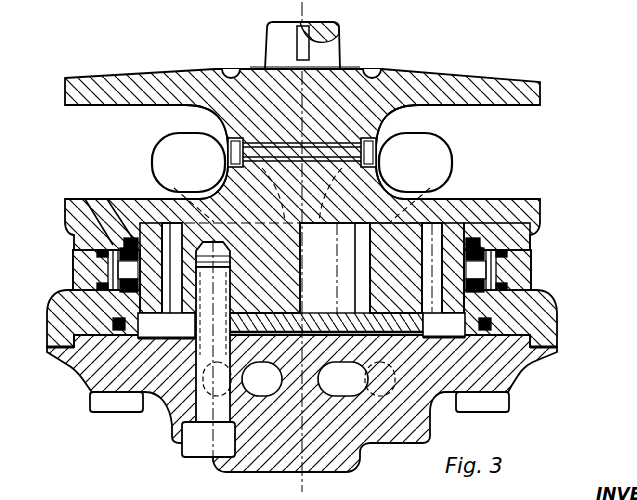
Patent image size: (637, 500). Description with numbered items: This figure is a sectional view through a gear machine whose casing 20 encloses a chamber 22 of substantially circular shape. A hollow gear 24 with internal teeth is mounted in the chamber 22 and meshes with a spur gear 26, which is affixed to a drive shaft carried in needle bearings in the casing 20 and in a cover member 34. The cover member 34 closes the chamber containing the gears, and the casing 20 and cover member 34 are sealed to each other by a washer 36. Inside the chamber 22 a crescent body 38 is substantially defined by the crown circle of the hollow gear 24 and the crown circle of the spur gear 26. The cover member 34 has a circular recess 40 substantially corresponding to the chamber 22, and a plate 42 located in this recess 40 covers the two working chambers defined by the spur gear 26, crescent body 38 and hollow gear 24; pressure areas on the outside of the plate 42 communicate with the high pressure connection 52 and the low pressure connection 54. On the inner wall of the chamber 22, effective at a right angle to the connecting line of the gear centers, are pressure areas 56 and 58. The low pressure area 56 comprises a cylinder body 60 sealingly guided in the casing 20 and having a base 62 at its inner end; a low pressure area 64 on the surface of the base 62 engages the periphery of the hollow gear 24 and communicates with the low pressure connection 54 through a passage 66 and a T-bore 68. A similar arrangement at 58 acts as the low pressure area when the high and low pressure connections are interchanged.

The casing 20 is at (528, 236).
The chamber 22 is at (449, 223).
The hollow gear 24 is at (464, 230).
The spur gear 26 is at (335, 268).
The cover member 34 is at (530, 364).
The washer 36 is at (481, 331).
The crescent body 38 is at (396, 268).
The circular recess 40 is at (425, 338).
The plate 42 is at (442, 325).
The high pressure connection 52 is at (458, 152).
The low pressure connection 54 is at (146, 152).
The low pressure area 56 is at (73, 267).
The pressure area 58 is at (530, 275).
The cylinder body 60 is at (132, 258).
The base 62 is at (132, 247).
The low pressure area 64 is at (136, 255).
The passage 66 is at (92, 208).
The T-bore 68 is at (138, 288).